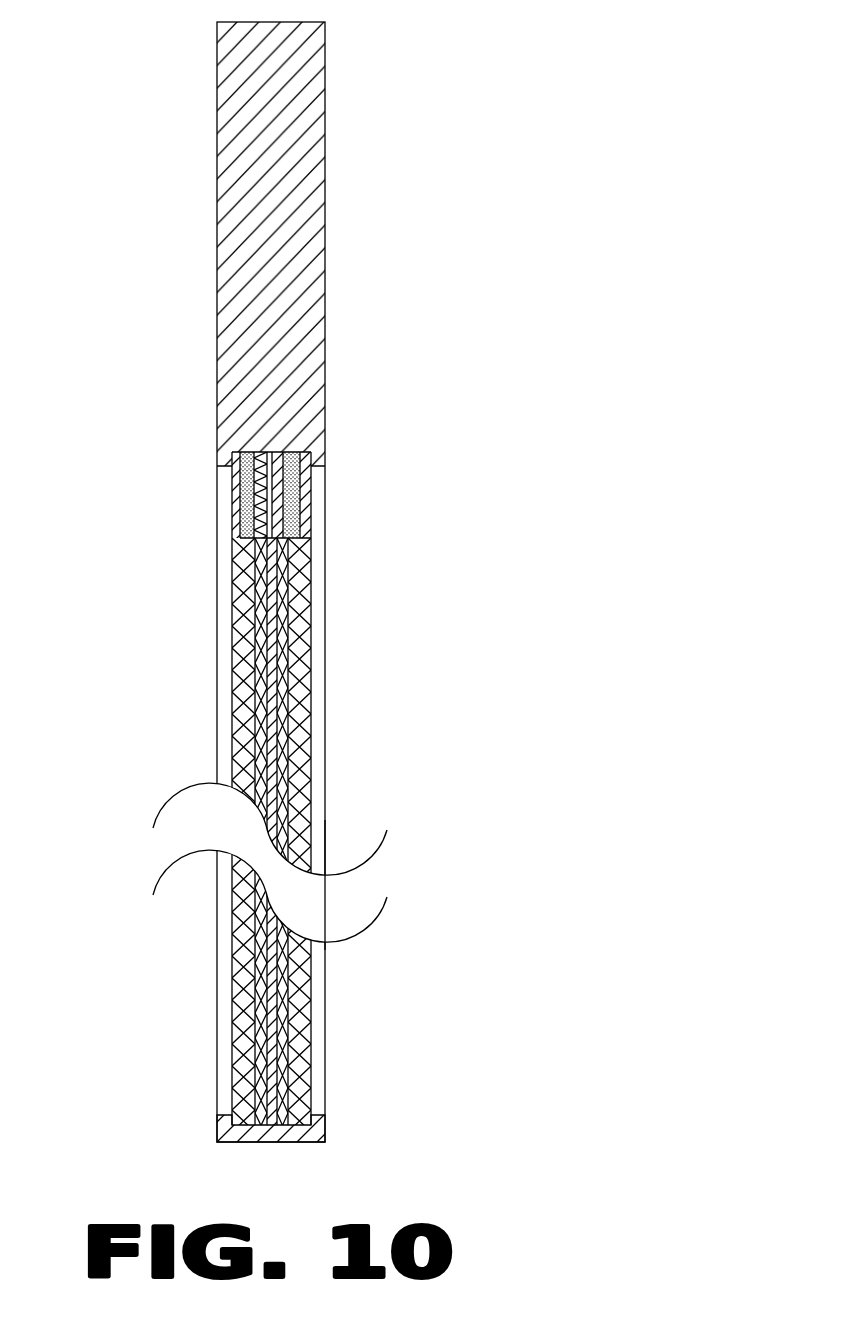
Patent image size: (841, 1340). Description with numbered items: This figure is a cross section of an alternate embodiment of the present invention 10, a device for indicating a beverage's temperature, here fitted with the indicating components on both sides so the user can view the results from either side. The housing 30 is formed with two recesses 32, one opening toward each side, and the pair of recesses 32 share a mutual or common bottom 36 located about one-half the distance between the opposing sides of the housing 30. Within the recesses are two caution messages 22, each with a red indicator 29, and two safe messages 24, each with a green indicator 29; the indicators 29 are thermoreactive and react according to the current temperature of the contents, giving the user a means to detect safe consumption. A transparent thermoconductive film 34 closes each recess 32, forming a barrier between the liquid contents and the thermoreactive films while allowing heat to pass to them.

The present invention 10 is at (382, 179).
The caution message 22 is at (247, 903).
The safe message 24 is at (263, 975).
The indicator 29 is at (247, 485).
The housing 30 is at (237, 302).
The recess 32 is at (225, 505).
The transparent thermoconductive film 34 is at (307, 603).
The bottom 36 is at (278, 1137).